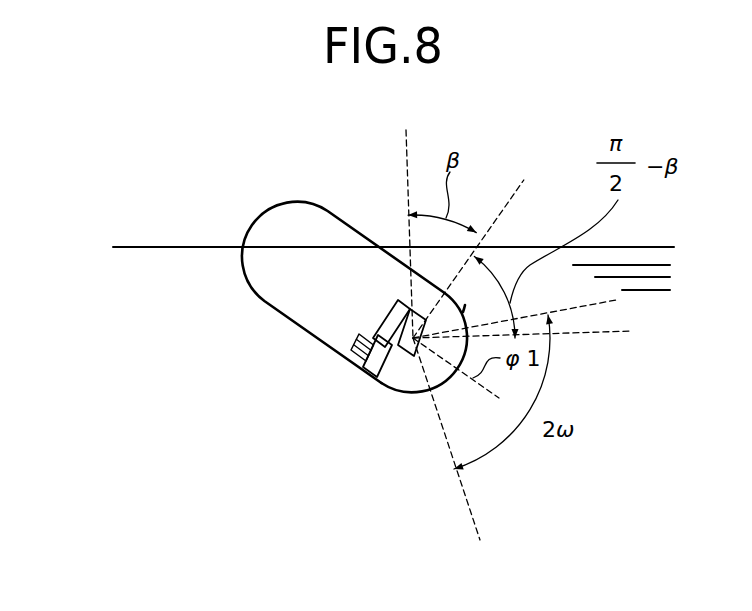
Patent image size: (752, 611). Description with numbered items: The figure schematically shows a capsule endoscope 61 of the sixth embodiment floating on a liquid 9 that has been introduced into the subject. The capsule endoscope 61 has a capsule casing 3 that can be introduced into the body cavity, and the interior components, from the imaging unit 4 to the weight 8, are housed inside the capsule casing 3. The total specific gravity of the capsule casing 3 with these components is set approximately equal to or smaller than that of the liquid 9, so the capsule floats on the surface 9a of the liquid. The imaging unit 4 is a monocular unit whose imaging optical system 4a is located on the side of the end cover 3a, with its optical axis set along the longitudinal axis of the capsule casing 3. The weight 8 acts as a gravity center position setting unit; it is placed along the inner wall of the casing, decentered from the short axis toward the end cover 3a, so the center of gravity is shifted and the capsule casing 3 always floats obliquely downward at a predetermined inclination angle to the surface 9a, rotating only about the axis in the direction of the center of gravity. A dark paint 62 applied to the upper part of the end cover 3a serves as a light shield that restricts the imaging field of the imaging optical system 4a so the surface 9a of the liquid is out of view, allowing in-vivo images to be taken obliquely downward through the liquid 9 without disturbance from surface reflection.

The capsule casing 3 is at (288, 318).
The end cover 3a is at (443, 387).
The imaging unit 4 is at (377, 322).
The imaging optical system 4a is at (393, 303).
The weight 8 is at (347, 352).
The liquid 9 is at (127, 283).
The surface of the liquid 9a is at (145, 245).
The capsule endoscope 61 is at (217, 275).
The dark paint 62 is at (463, 310).